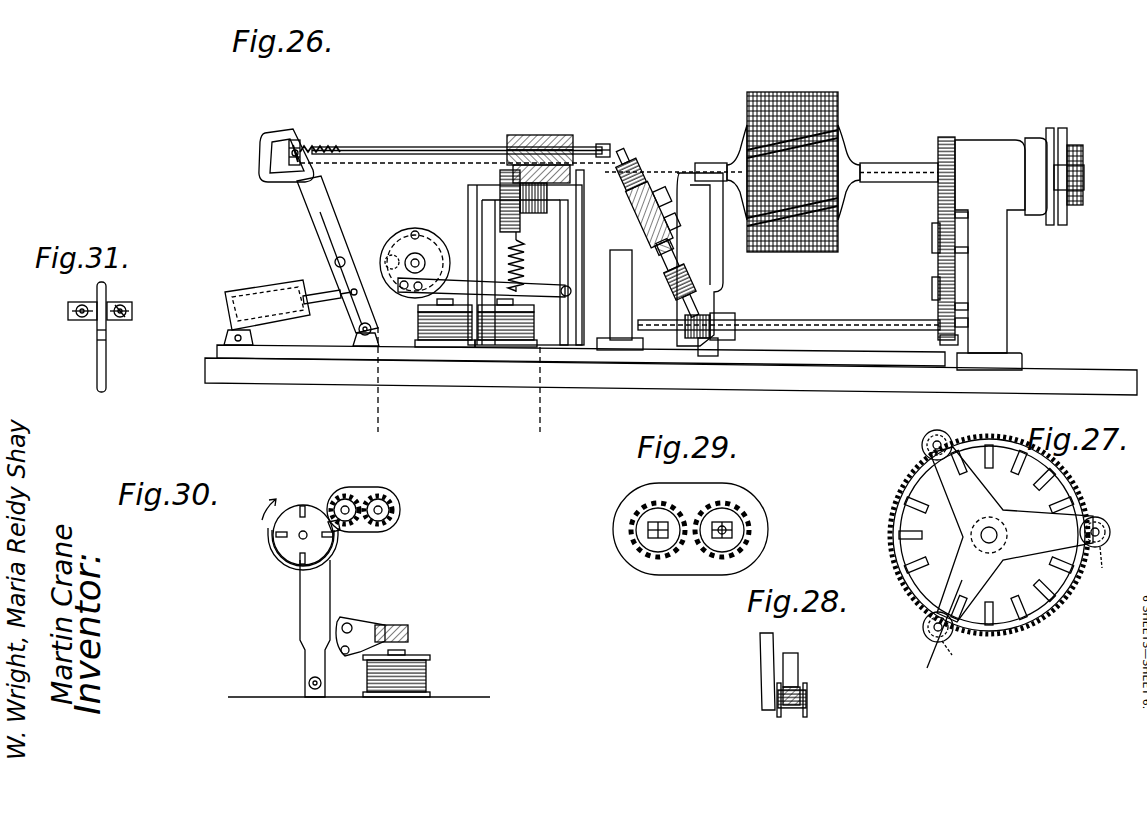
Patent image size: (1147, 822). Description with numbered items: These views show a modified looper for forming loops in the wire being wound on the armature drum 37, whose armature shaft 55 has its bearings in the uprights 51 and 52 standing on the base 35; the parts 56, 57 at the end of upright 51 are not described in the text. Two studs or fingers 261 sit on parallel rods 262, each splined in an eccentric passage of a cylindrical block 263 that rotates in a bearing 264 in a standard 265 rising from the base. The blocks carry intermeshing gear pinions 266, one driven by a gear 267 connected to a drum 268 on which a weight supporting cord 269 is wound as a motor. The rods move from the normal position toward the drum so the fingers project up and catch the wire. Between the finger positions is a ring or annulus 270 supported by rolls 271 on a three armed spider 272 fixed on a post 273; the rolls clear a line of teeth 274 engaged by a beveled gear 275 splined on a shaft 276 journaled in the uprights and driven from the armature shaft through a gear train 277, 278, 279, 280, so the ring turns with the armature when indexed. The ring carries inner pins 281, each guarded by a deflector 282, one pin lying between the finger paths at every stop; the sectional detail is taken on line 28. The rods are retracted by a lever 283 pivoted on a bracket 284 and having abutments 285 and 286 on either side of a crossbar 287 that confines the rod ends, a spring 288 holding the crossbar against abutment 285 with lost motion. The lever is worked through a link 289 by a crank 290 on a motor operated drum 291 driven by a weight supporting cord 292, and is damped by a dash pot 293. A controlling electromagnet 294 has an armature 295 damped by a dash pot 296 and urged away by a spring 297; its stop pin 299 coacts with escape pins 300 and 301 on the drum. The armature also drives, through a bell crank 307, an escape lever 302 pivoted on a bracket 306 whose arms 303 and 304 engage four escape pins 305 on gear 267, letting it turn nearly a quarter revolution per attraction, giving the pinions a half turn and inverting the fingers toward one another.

In FIG. 26, the base 35 is at (588, 376).
In FIG. 26, the drum 37 is at (801, 93).
In FIG. 26, the upright 51 is at (1009, 285).
In FIG. 26, the upright 52 is at (725, 268).
In FIG. 26, the drum shaft 55 is at (890, 165).
In FIG. 26, the disk 56 is at (1048, 128).
In FIG. 26, the disk 57 is at (1062, 128).
In FIG. 27, the section line 28 is at (953, 602).
In FIG. 26, the studs or fingers 261 is at (603, 144).
In FIG. 30, the studs or fingers 261 is at (316, 506).
In FIG. 29, the studs or fingers 261 is at (652, 527).
In FIG. 26, the rods 262 is at (443, 147).
In FIG. 31, the rods 262 is at (68, 311).
In FIG. 30, the rods 262 is at (383, 512).
In FIG. 29, the rods 262 is at (650, 539).
In FIG. 26, the block 263 is at (546, 135).
In FIG. 29, the block 263 is at (736, 515).
In FIG. 26, the bearing 264 is at (562, 150).
In FIG. 30, the bearing 264 is at (370, 488).
In FIG. 29, the bearing 264 is at (700, 486).
In FIG. 26, the standard 265 is at (578, 215).
In FIG. 26, the gear pinions 266 is at (513, 142).
In FIG. 30, the gear pinions 266 is at (345, 495).
In FIG. 29, the gear pinions 266 is at (716, 558).
In FIG. 26, the gear 267 is at (505, 170).
In FIG. 26, the drum 268 is at (582, 292).
In FIG. 26, the weight supporting cord 269 is at (568, 242).
In FIG. 26, the ring or annulus 270 is at (690, 165).
In FIG. 28, the ring or annulus 270 is at (800, 690).
In FIG. 27, the ring or annulus 270 is at (981, 445).
In FIG. 28, the rolls 271 is at (791, 713).
In FIG. 27, the rolls 271 is at (1031, 610).
In FIG. 28, the three armed spider 272 is at (760, 667).
In FIG. 27, the three armed spider 272 is at (1028, 545).
In FIG. 26, the post 273 is at (685, 325).
In FIG. 26, the teeth 274 is at (620, 147).
In FIG. 27, the teeth 274 is at (1060, 611).
In FIG. 26, the beveled gear 275 is at (709, 356).
In FIG. 26, the shaft 276 is at (787, 320).
In FIG. 26, the gear train 277 is at (956, 186).
In FIG. 26, the gear train 278 is at (932, 239).
In FIG. 26, the gear train 279 is at (932, 288).
In FIG. 26, the gear train 280 is at (940, 342).
In FIG. 26, the pins 281 is at (631, 158).
In FIG. 28, the pins 281 is at (806, 698).
In FIG. 27, the pins 281 is at (925, 440).
In FIG. 26, the deflector 282 is at (646, 193).
In FIG. 27, the deflector 282 is at (905, 525).
In FIG. 26, the lever 283 is at (323, 213).
In FIG. 31, the lever 283 is at (106, 358).
In FIG. 26, the bracket 284 is at (358, 330).
In FIG. 26, the abutment 285 is at (304, 138).
In FIG. 26, the abutment 286 is at (266, 172).
In FIG. 26, the crossbar 287 is at (297, 151).
In FIG. 31, the crossbar 287 is at (126, 306).
In FIG. 26, the spring 288 is at (326, 146).
In FIG. 26, the link 289 is at (361, 240).
In FIG. 26, the crank 290 is at (387, 228).
In FIG. 26, the motor operated drum 291 is at (426, 256).
In FIG. 26, the weight supporting cord 292 is at (378, 424).
In FIG. 26, the dash pot 293 is at (279, 286).
In FIG. 26, the controlling electromagnet 294 is at (488, 332).
In FIG. 30, the controlling electromagnet 294 is at (430, 676).
In FIG. 26, the armature 295 is at (454, 322).
In FIG. 30, the armature 295 is at (408, 633).
In FIG. 26, the dash pot 296 is at (410, 298).
In FIG. 26, the spring 297 is at (516, 398).
In FIG. 26, the stop pin 299 is at (388, 340).
In FIG. 26, the escape pin 300 is at (417, 230).
In FIG. 26, the escape pin 301 is at (441, 250).
In FIG. 30, the escape lever 302 is at (331, 600).
In FIG. 30, the arm 303 is at (268, 537).
In FIG. 30, the arm 304 is at (338, 529).
In FIG. 30, the escape pins 305 is at (300, 508).
In FIG. 30, the bracket 306 is at (309, 683).
In FIG. 30, the bell crank 307 is at (370, 623).